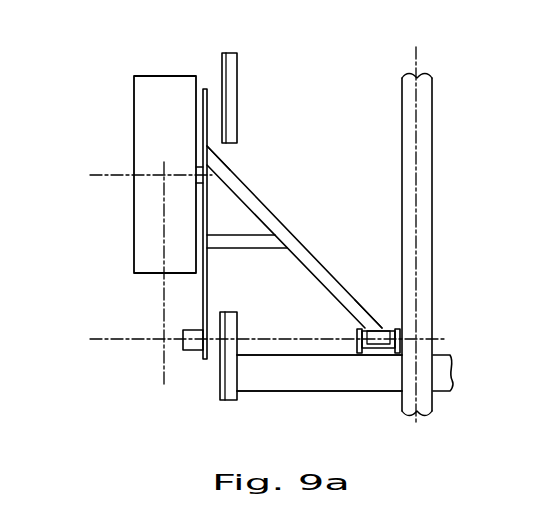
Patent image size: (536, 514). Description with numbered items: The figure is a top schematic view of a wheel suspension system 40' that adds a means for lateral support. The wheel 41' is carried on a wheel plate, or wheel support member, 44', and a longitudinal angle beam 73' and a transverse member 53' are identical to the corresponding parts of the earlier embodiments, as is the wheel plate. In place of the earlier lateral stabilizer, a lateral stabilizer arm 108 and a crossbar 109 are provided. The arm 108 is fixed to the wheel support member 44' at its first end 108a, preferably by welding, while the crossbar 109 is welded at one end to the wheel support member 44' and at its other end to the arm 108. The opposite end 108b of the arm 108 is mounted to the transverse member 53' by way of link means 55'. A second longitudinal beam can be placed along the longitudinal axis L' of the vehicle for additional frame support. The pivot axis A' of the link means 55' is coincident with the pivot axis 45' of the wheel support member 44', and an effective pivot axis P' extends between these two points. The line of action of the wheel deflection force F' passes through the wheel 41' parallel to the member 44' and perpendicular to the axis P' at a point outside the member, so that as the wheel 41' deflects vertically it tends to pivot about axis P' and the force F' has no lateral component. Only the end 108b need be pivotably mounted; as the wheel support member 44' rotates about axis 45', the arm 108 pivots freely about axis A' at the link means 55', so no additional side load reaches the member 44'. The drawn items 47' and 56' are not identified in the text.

The wheel 41' is at (121, 160).
The horizontal axis 47' is at (133, 126).
The wheel deflection force F' is at (114, 274).
The wheel plate 44' is at (131, 224).
The pivot axis 45' is at (254, 389).
The block 56' is at (175, 385).
The longitudinal angle beam 73' is at (283, 86).
The suspension system 40' is at (309, 191).
The lateral stabilizer arm 108 is at (253, 200).
The end of lateral stabilizer arm 108a is at (219, 140).
The end of lateral stabilizer arm 108b is at (377, 328).
The crossbar 109 is at (268, 240).
The link means 55' is at (378, 297).
The pivot axis A' is at (447, 235).
The longitudinal axis L' is at (457, 255).
The transverse member 53' is at (336, 381).
The effective pivot axis P' is at (319, 389).